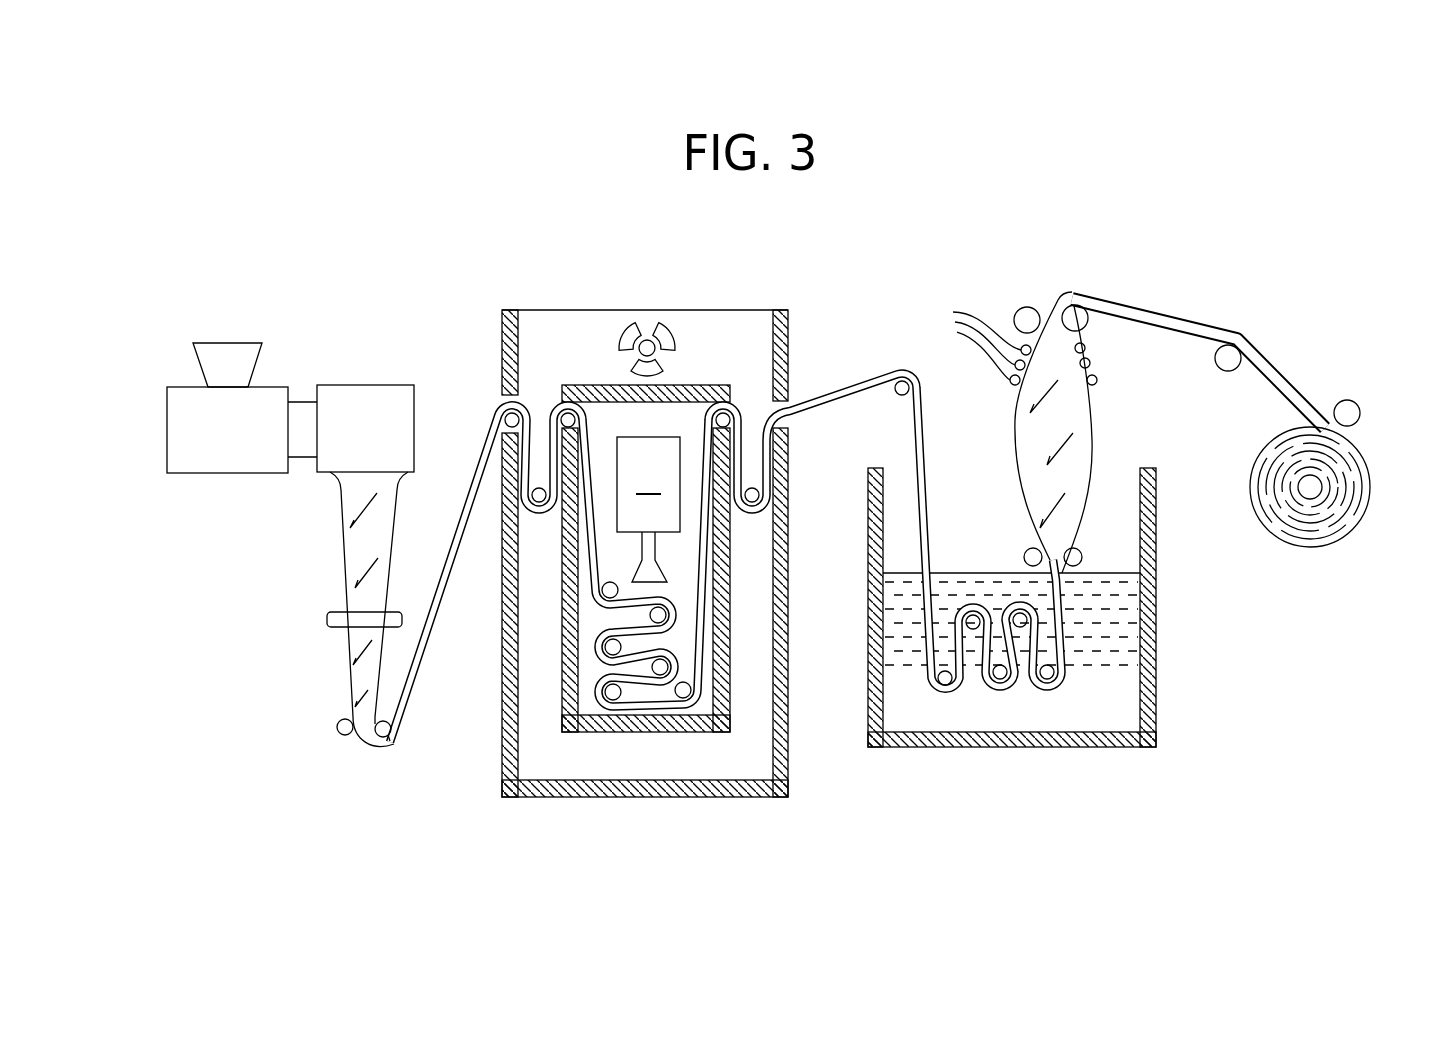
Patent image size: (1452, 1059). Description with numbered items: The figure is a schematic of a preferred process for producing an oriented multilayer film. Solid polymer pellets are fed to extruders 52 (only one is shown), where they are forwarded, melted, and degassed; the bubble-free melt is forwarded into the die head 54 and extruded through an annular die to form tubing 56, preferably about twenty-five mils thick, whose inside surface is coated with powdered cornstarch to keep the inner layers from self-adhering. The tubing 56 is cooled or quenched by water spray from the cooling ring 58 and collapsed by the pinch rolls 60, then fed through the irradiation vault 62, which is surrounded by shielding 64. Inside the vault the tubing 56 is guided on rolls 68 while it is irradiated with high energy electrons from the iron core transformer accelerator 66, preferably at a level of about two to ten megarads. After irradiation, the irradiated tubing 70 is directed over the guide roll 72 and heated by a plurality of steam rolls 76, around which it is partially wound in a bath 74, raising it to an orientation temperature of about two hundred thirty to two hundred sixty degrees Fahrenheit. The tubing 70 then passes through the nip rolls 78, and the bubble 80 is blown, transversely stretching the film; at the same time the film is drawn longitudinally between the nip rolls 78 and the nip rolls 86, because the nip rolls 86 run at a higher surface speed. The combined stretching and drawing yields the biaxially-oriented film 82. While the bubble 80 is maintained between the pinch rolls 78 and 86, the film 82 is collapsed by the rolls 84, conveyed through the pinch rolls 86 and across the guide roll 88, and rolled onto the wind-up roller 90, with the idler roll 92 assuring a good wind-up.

The extruder 52 is at (178, 428).
The die head 54 is at (360, 395).
The tubing 56 is at (337, 493).
The cooling ring 58 is at (327, 619).
The pinch rolls 60 is at (337, 730).
The irradiation vault 62 is at (733, 602).
The shielding 64 is at (663, 768).
The iron core transformer accelerator 66 is at (648, 452).
The rolls 68 is at (610, 587).
The irradiated tubing 70 is at (822, 392).
The guide roll 72 is at (898, 397).
The bath tank 74 is at (1157, 632).
The steam rolls 76 is at (945, 687).
The nip rolls 78 is at (1030, 552).
The bubble 80 is at (1033, 397).
The biaxially-oriented film 82 is at (1165, 310).
The rolls 84 is at (975, 344).
The nip rolls 86 is at (1090, 323).
The guide roll 88 is at (1225, 372).
The wind-up roller 90 is at (1323, 492).
The idler roll 92 is at (1350, 400).